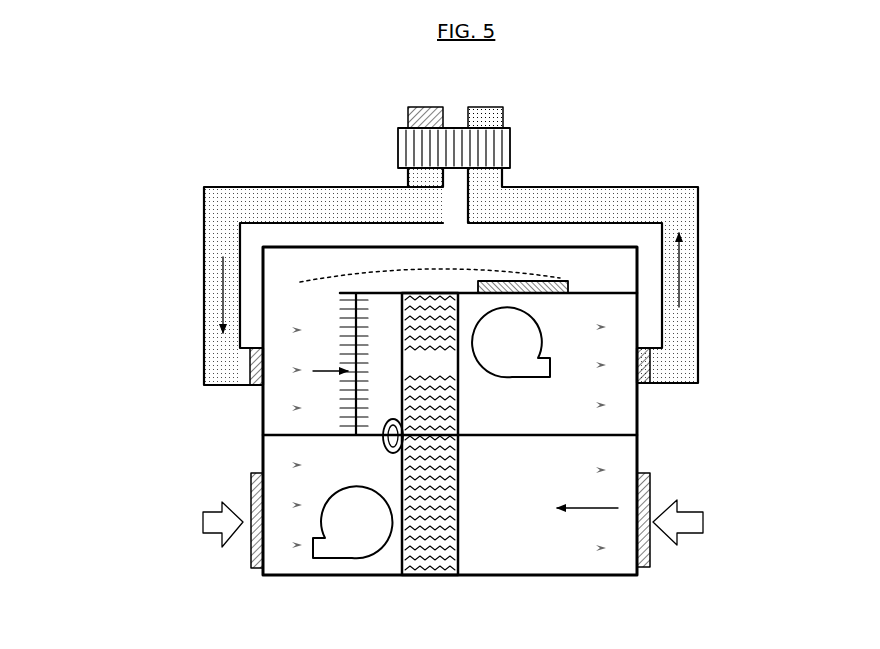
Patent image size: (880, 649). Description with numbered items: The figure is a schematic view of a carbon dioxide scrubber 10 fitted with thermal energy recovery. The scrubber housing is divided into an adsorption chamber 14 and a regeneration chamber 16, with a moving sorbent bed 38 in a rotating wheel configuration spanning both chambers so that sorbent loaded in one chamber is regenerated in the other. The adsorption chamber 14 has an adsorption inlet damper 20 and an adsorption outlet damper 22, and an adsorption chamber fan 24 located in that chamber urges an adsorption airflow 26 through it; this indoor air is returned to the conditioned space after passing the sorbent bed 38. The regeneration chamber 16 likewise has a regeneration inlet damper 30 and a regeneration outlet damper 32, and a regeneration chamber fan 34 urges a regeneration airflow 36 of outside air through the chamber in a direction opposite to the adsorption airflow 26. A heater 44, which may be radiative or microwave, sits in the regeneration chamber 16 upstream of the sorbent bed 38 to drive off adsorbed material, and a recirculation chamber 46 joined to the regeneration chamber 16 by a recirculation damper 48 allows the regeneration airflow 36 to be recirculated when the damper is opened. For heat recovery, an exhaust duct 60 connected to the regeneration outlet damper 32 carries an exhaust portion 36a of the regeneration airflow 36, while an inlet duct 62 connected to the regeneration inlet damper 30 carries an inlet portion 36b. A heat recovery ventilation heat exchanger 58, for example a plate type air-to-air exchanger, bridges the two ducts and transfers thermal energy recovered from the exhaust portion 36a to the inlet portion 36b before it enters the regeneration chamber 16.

The CO2 scrubber 10 is at (118, 125).
The adsorption chamber 14 is at (450, 411).
The regeneration chamber 16 is at (488, 354).
The adsorption inlet damper 20 is at (650, 553).
The adsorption outlet damper 22 is at (253, 555).
The adsorption chamber fan 24 is at (352, 522).
The adsorption airflow 26 is at (580, 505).
The regeneration inlet damper 30 is at (258, 370).
The regeneration outlet damper 32 is at (648, 382).
The regeneration chamber fan 34 is at (511, 342).
The regeneration airflow 36 is at (313, 372).
The exhaust portion of the regeneration airflow 36a is at (680, 273).
The inlet portion of the regeneration airflow 36b is at (213, 302).
The sorbent bed 38 is at (420, 434).
The heater 44 is at (355, 307).
The recirculation chamber 46 is at (380, 263).
The recirculation damper 48 is at (543, 282).
The HRV heat exchanger 58 is at (492, 143).
The exhaust duct 60 is at (650, 207).
The inlet duct 62 is at (227, 233).